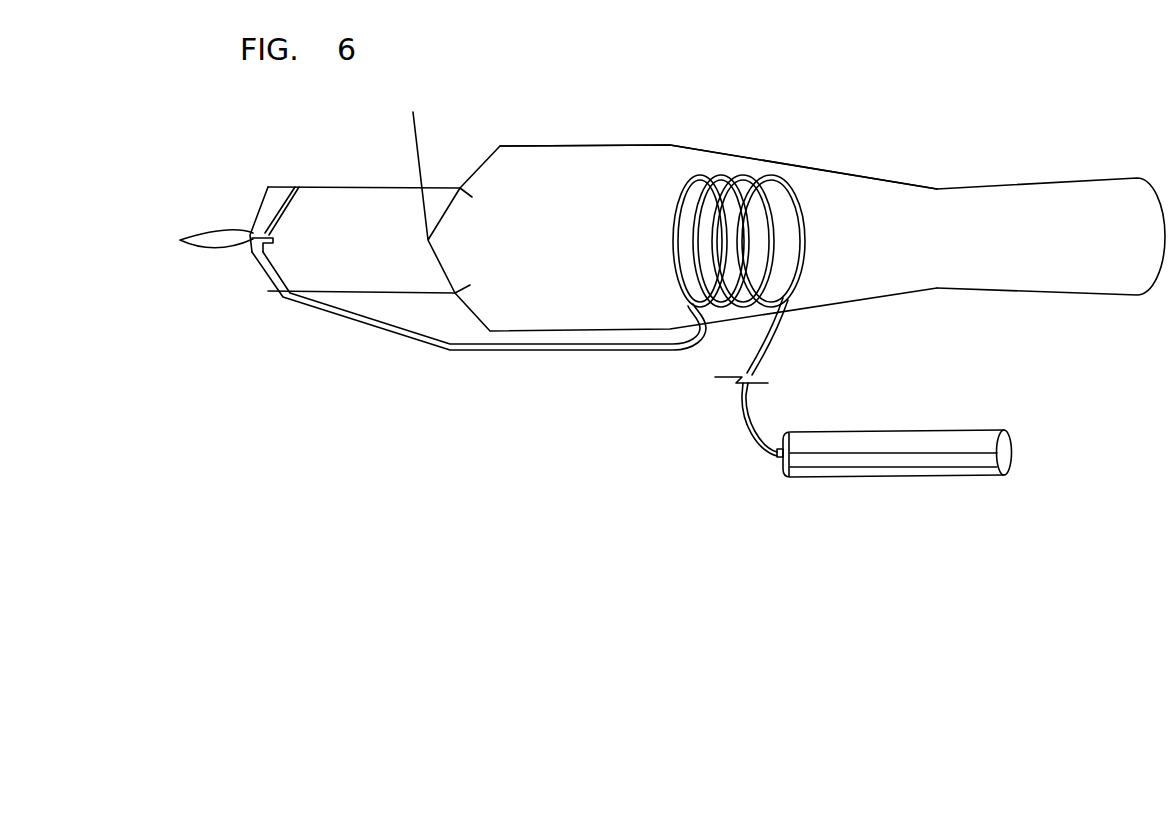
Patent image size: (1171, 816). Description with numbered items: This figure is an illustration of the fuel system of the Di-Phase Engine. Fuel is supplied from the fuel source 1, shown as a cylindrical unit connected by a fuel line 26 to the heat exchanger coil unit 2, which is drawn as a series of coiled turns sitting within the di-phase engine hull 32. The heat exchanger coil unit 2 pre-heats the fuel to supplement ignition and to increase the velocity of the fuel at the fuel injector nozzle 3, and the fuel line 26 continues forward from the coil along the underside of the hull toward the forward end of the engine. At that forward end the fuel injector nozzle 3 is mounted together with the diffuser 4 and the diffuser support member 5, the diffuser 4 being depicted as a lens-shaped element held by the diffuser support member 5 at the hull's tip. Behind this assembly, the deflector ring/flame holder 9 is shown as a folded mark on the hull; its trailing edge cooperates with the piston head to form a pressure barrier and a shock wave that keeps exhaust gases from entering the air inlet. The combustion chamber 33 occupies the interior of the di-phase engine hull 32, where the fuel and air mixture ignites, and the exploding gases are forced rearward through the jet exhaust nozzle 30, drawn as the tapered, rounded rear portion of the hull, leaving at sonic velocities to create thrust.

The fuel source 1 is at (897, 432).
The heat exchanger coil unit 2 is at (807, 265).
The fuel injector nozzle 3 is at (267, 233).
The diffuser 4 is at (215, 227).
The diffuser support member 5 is at (260, 205).
The deflector ring/flame holder 9 is at (413, 112).
The fuel line 26 is at (540, 352).
The jet exhaust nozzle 30 is at (1137, 295).
The di-phase engine hull 32 is at (543, 145).
The combustion chamber 33 is at (608, 207).